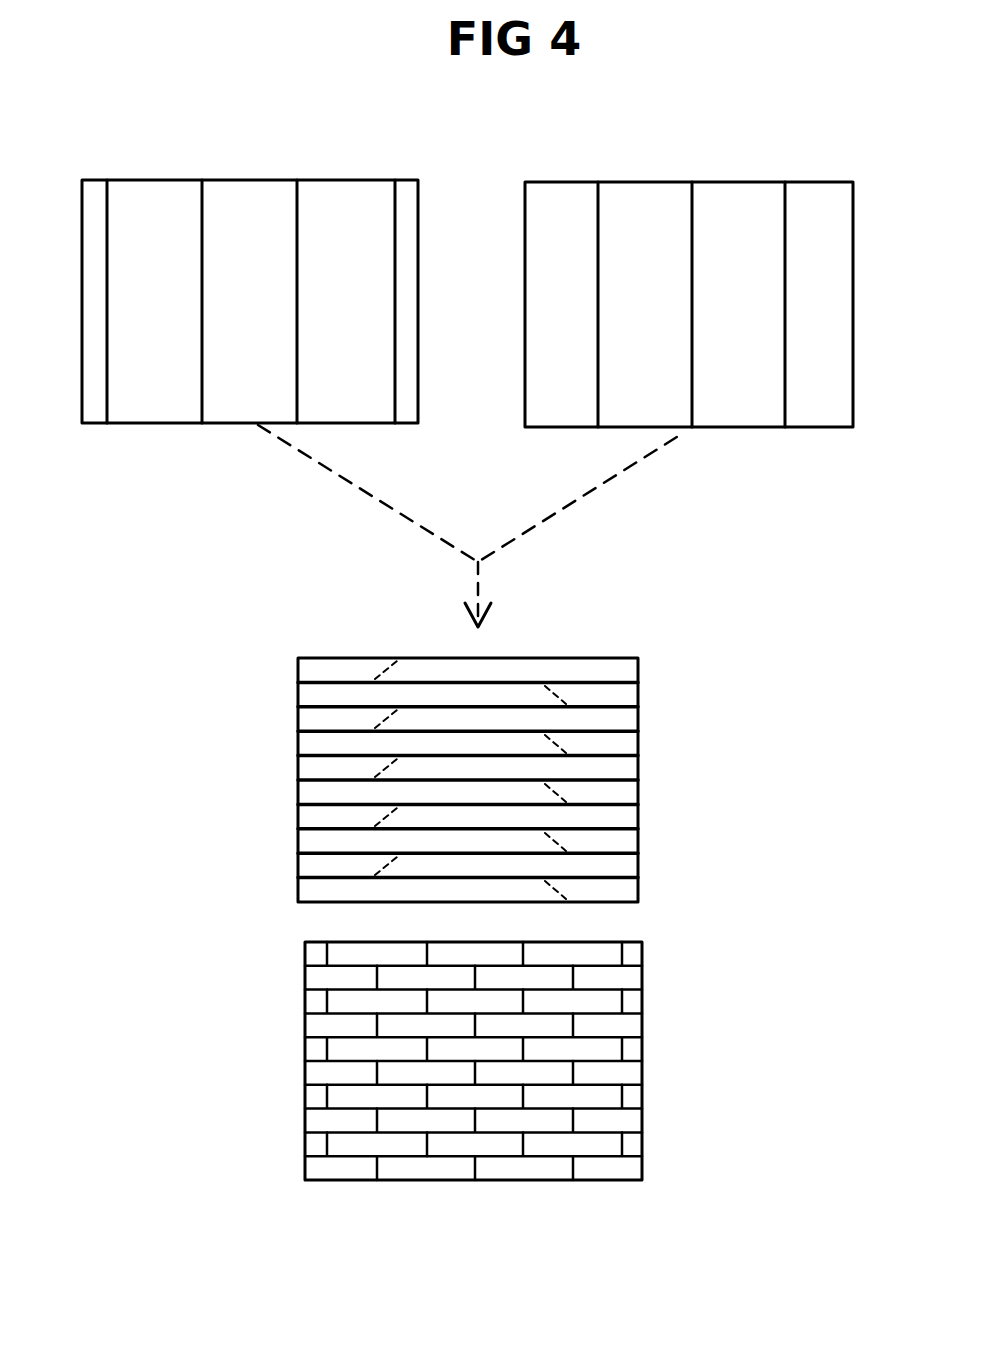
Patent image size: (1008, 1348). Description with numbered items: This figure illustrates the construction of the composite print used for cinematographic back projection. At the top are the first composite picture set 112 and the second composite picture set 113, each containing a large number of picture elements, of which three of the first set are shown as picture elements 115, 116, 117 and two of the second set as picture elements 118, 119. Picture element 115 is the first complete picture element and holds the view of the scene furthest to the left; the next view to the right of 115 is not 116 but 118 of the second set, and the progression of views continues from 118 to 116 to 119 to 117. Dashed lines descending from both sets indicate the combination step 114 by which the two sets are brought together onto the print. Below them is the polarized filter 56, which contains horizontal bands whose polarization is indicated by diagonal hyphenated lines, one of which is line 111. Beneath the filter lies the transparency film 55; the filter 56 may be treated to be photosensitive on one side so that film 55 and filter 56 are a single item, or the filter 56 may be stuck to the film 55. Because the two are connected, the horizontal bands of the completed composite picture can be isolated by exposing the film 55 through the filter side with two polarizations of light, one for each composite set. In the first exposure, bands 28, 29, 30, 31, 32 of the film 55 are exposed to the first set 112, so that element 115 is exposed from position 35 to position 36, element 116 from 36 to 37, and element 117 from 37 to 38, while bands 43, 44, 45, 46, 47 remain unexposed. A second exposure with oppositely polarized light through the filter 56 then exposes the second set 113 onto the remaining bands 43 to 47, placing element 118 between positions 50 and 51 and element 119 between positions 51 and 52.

The first composite picture set 112 is at (80, 190).
The second composite picture set 113 is at (854, 206).
The picture element 115 is at (73, 156).
The picture element 116 is at (199, 160).
The picture element 117 is at (425, 154).
The picture element 118 is at (691, 165).
The picture element 119 is at (691, 165).
The lamination step 114 is at (601, 490).
The diagonal hyphenated line 111 is at (388, 667).
The polarized filter 56 is at (618, 660).
The transparency film 55 is at (317, 940).
The band 28 is at (305, 954).
The band 29 is at (305, 1002).
The band 30 is at (305, 1050).
The band 31 is at (307, 1099).
The band 32 is at (305, 1147).
The band 43 is at (642, 981).
The band 44 is at (642, 1027).
The band 45 is at (642, 1076).
The band 46 is at (642, 1122).
The band 47 is at (642, 1172).
The exposure position 35 is at (327, 942).
The exposure position 36 is at (427, 942).
The exposure position 37 is at (523, 942).
The exposure position 38 is at (622, 942).
The exposure position 50 is at (377, 1181).
The exposure position 51 is at (475, 1181).
The exposure position 52 is at (573, 1181).